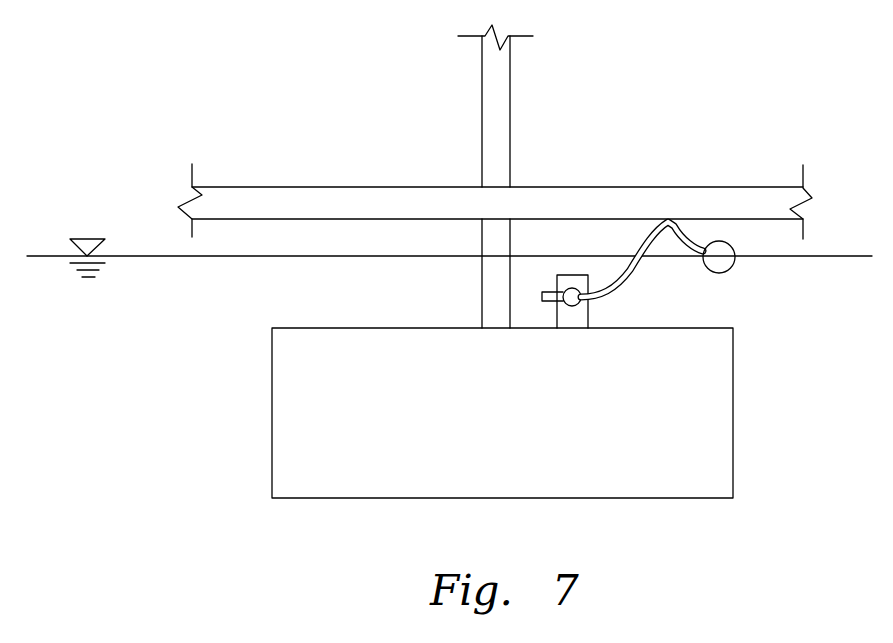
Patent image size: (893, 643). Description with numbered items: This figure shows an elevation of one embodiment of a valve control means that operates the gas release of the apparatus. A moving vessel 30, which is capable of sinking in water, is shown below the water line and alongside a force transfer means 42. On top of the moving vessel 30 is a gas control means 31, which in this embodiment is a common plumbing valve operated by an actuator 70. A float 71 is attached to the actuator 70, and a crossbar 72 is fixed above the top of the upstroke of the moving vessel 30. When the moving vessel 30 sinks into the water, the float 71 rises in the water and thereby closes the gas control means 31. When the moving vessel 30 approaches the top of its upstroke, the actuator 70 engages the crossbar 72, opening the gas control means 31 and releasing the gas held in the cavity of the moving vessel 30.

The moving vessel 30 is at (272, 410).
The gas control means 31 is at (572, 275).
The force transfer means 42 is at (482, 98).
The actuator 70 is at (668, 222).
The float 71 is at (735, 251).
The crossbar 72 is at (258, 187).